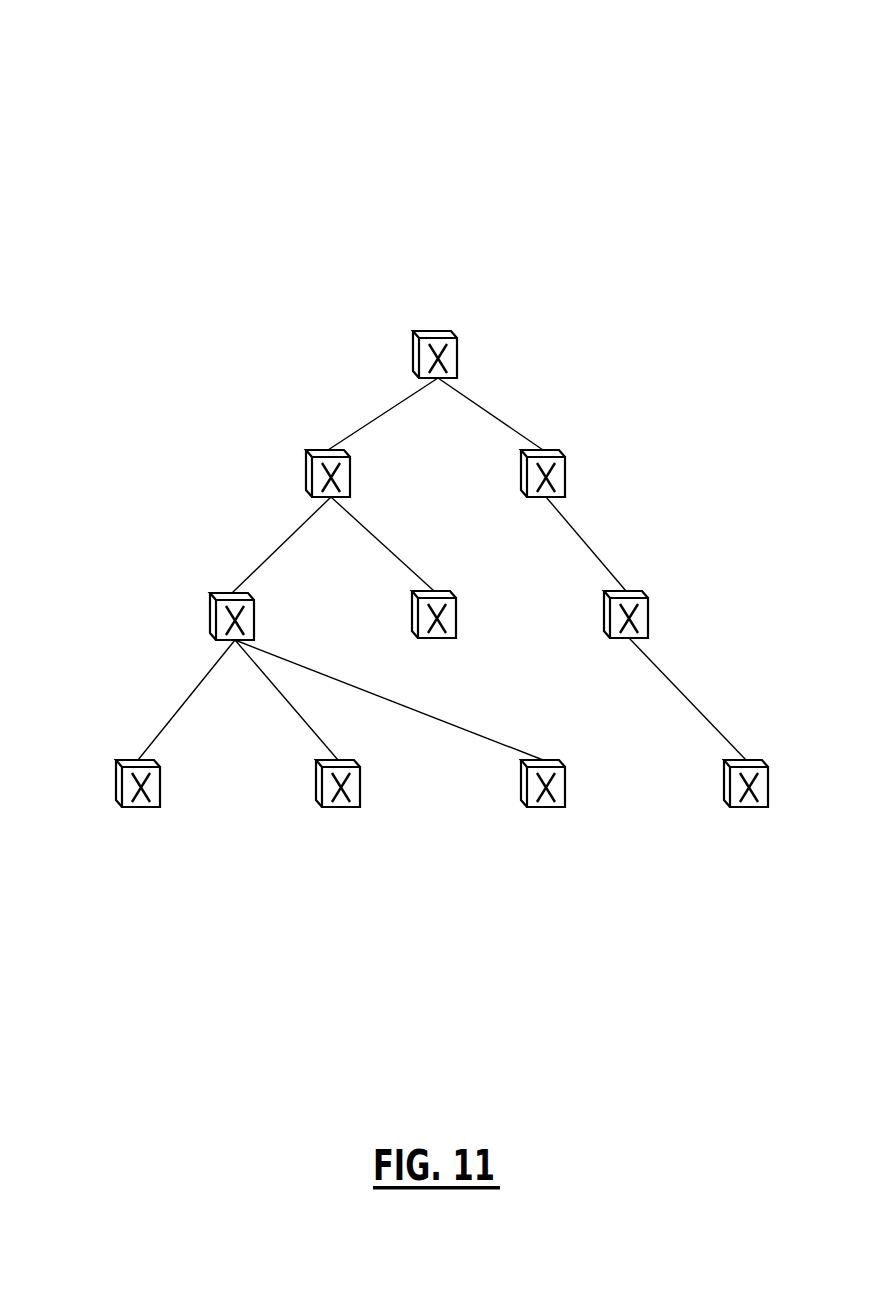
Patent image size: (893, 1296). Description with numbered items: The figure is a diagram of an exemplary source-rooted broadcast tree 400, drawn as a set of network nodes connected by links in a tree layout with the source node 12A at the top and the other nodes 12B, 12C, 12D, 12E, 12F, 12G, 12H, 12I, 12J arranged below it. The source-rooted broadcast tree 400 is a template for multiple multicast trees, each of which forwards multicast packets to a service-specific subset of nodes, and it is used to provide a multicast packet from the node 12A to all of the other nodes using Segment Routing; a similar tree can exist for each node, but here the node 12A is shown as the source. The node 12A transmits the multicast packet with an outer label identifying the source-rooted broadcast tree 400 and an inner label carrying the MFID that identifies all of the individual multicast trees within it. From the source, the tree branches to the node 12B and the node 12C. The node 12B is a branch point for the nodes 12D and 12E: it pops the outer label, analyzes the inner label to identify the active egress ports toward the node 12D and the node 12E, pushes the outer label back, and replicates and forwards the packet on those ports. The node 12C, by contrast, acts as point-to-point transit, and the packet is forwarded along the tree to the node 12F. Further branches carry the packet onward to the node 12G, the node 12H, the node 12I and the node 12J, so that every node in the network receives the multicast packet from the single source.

The source-rooted broadcast tree 400 is at (458, 64).
The source node 12A is at (432, 332).
The node 12B is at (308, 468).
The node 12C is at (550, 448).
The node 12D is at (213, 620).
The node 12E is at (439, 592).
The node 12F is at (633, 592).
The node 12G is at (116, 790).
The node 12H is at (316, 792).
The node 12I is at (552, 758).
The node 12J is at (752, 758).